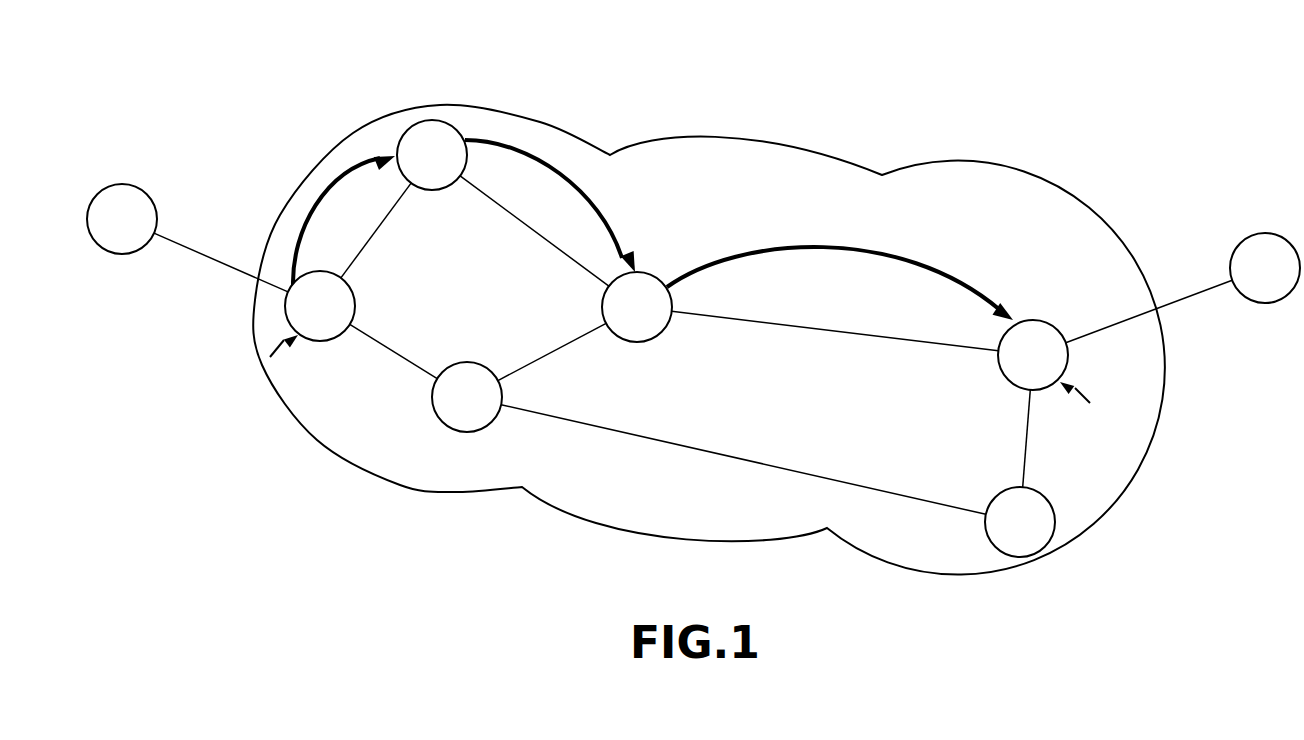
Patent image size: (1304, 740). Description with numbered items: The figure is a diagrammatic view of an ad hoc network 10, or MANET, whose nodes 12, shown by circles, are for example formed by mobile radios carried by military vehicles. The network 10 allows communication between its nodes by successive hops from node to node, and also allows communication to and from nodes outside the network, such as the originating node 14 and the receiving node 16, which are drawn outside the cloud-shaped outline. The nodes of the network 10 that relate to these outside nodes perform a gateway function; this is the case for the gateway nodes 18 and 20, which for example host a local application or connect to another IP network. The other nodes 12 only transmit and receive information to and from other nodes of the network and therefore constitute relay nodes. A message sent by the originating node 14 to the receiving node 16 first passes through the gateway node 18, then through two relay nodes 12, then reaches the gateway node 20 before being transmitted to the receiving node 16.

The ad hoc network 10 is at (823, 143).
The node 12 is at (428, 133).
The originating node 14 is at (123, 195).
The receiving node 16 is at (1257, 242).
The gateway node 18 is at (270, 357).
The gateway node 20 is at (1090, 403).